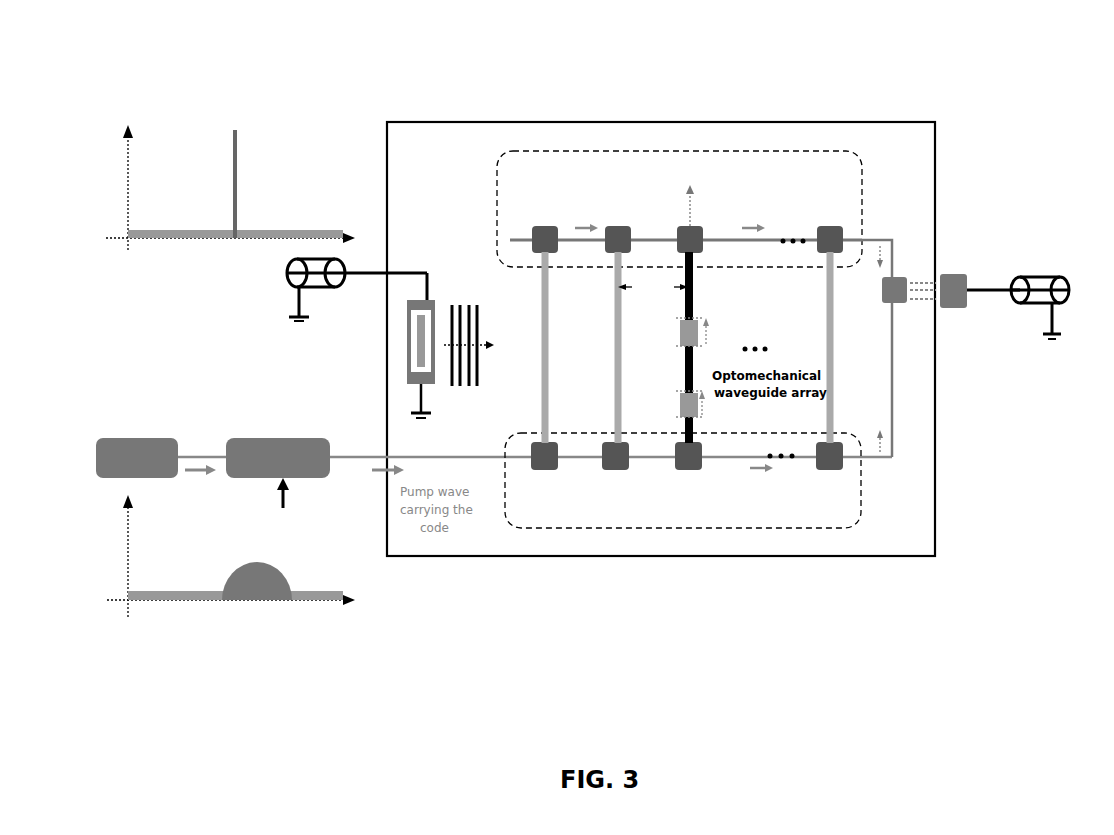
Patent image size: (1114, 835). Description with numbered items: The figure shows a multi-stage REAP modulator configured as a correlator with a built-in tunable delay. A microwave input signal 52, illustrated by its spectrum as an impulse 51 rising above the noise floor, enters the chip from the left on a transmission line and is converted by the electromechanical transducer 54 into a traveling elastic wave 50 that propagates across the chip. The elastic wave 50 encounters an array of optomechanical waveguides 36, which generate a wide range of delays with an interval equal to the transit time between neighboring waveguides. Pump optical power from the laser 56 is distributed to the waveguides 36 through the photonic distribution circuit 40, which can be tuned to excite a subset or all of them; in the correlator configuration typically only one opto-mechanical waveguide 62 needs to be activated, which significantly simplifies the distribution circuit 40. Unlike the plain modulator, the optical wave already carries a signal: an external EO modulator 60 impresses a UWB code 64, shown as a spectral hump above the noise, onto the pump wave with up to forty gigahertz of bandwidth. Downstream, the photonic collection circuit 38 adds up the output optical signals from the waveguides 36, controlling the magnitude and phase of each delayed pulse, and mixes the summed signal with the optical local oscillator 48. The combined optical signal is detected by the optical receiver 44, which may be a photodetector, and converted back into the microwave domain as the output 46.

The optomechanical waveguides 36 is at (810, 270).
The photonic collection circuit 38 is at (679, 209).
The photonic distribution circuit 40 is at (683, 480).
The optical receiver 44 is at (963, 306).
The output 46 is at (1023, 284).
The optical local oscillator 48 is at (900, 305).
The elastic wave 50 is at (476, 368).
The impulse 51 is at (100, 103).
The input signal 52 is at (316, 290).
The electromechanical transducer 54 is at (436, 294).
The laser 56 is at (104, 426).
The EO modulator 60 is at (253, 428).
The opto-mechanical waveguide 62 is at (700, 283).
The UWB code 64 is at (272, 608).